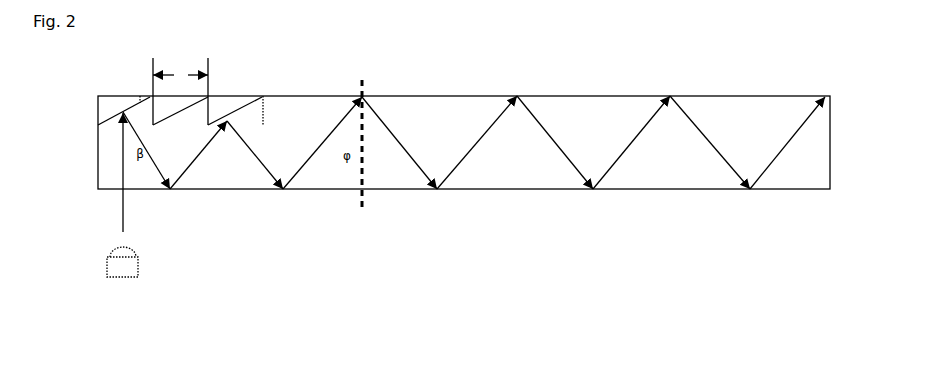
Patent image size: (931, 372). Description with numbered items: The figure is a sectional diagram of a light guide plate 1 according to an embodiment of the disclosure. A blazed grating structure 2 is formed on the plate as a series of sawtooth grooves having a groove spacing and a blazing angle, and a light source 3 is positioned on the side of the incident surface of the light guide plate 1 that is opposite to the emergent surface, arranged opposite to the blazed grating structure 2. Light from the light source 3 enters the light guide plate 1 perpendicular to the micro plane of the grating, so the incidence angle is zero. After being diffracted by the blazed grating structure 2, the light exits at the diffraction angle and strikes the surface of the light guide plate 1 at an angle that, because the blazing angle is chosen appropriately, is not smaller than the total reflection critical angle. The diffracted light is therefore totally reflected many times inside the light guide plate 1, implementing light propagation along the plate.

The light guide plate 1 is at (392, 180).
The blazed grating structure 2 is at (102, 118).
The light source 3 is at (130, 277).